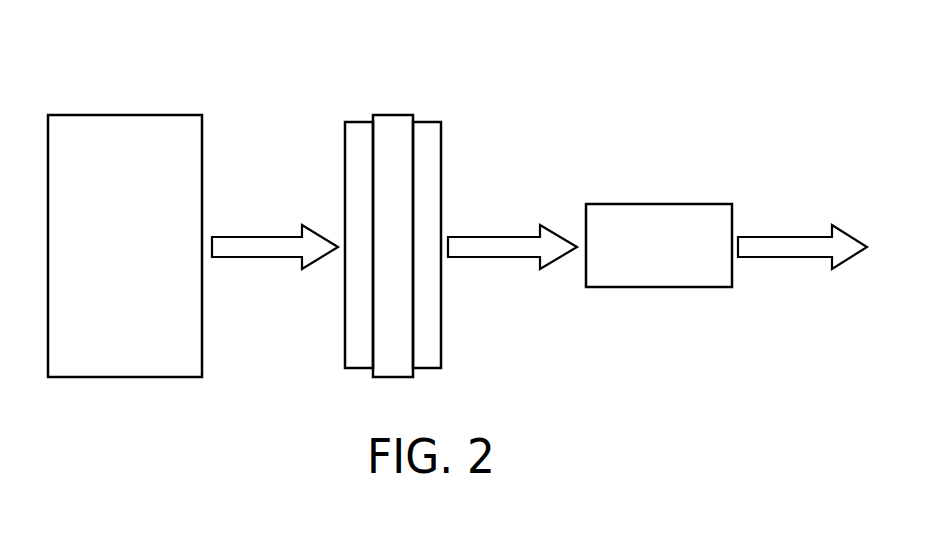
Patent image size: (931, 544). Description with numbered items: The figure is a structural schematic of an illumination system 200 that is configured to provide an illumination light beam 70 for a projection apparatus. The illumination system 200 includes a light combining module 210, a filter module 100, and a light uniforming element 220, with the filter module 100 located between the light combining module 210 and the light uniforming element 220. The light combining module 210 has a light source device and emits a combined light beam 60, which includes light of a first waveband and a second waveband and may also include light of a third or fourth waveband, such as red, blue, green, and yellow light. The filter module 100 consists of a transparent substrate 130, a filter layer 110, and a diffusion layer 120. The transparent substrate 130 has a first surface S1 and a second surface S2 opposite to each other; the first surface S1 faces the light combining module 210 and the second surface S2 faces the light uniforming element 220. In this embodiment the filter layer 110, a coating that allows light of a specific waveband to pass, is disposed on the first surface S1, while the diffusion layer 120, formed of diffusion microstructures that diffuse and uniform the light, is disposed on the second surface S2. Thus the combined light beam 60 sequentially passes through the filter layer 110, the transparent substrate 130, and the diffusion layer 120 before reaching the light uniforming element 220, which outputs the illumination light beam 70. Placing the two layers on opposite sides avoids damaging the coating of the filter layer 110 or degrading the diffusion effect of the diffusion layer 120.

The illumination system 200 is at (868, 391).
The light combining module 210 is at (125, 114).
The combined light beam 60 is at (259, 234).
The filter module 100 is at (393, 200).
The filter layer 110 is at (361, 121).
The transparent substrate 130 is at (391, 114).
The diffusion layer 120 is at (435, 216).
The first surface S1 is at (372, 318).
The second surface S2 is at (414, 318).
The illumination light beam 70 is at (497, 234).
The light uniforming element 220 is at (657, 203).